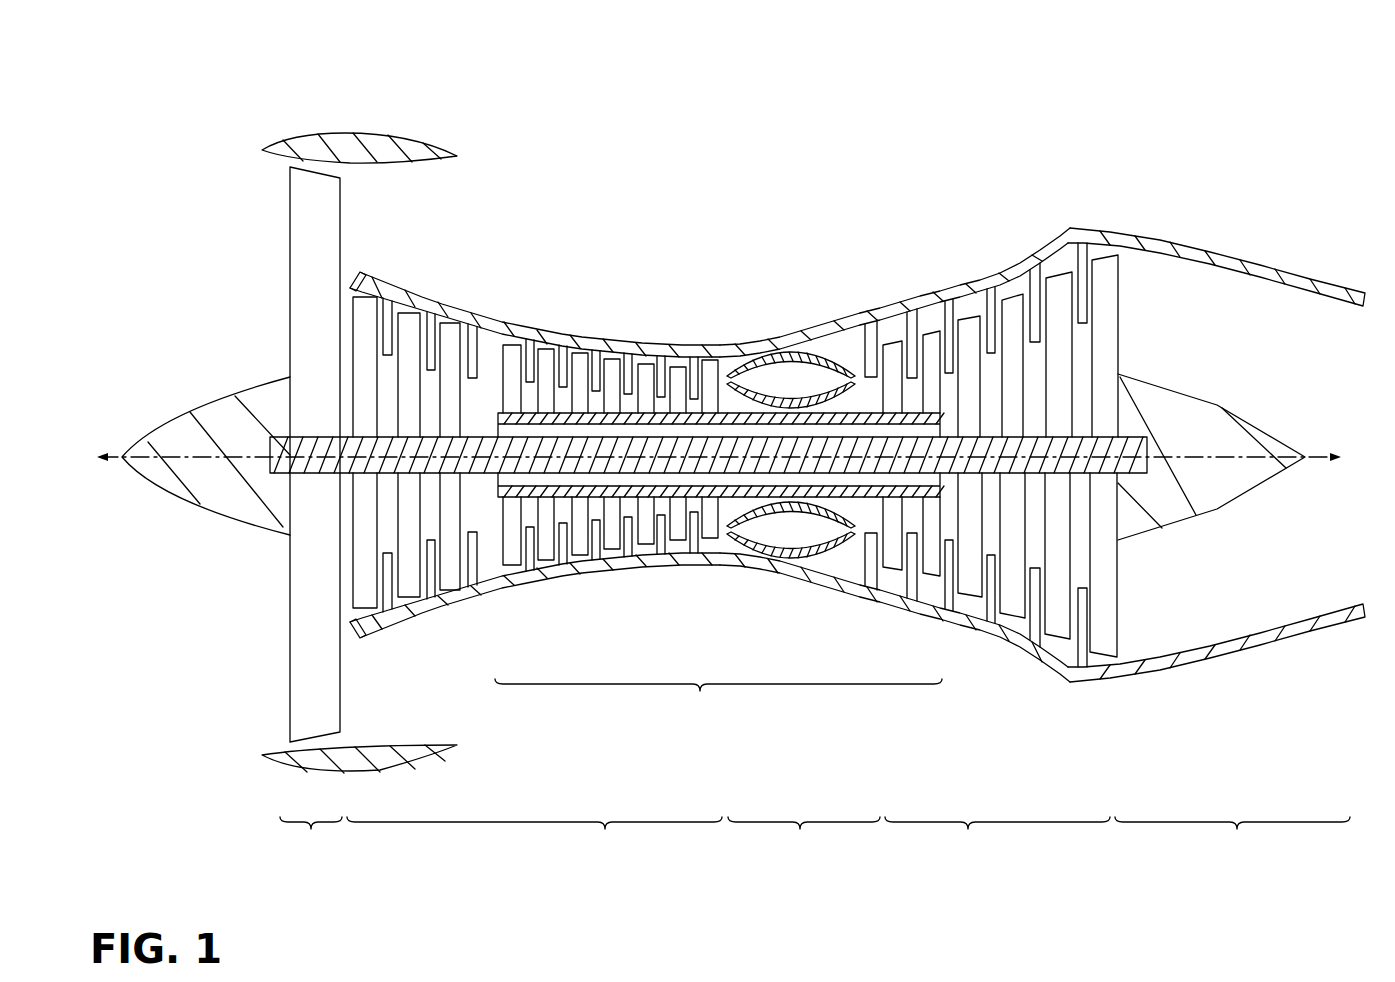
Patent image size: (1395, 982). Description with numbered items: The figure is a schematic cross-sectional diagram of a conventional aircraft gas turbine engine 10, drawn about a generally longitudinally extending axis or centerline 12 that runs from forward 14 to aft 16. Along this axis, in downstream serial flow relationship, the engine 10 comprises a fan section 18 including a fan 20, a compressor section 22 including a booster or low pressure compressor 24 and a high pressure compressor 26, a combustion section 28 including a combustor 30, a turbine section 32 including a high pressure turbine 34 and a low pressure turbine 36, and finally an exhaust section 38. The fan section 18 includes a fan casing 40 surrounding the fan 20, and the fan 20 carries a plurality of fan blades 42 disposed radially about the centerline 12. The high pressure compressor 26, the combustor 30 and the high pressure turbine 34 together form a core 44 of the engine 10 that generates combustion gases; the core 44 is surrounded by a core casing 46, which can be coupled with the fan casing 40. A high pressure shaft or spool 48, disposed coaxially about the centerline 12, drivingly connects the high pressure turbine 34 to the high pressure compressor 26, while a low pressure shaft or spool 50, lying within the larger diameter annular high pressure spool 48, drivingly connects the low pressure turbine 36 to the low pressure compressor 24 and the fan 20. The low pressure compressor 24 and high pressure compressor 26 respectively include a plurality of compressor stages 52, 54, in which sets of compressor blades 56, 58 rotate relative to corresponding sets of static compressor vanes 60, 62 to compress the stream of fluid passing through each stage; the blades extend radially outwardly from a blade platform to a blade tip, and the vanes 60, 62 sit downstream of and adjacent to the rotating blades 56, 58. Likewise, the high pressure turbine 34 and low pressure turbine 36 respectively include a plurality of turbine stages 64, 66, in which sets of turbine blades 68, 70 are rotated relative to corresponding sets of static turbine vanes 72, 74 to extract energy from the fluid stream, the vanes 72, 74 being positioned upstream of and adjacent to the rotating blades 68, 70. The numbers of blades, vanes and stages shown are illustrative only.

The gas turbine engine 10 is at (147, 64).
The centerline 12 is at (186, 453).
The forward 14 is at (84, 457).
The aft 16 is at (1355, 457).
The fan section 18 is at (269, 516).
The fan 20 is at (280, 231).
The compressor section 22 is at (534, 520).
The low pressure compressor 24 is at (488, 612).
The high pressure compressor 26 is at (654, 580).
The combustion section 28 is at (800, 551).
The combustor 30 is at (848, 353).
The turbine section 32 is at (986, 509).
The high pressure turbine 34 is at (866, 606).
The low pressure turbine 36 is at (1001, 651).
The exhaust section 38 is at (1176, 495).
The fan casing 40 is at (363, 133).
The fan blades 42 is at (298, 683).
The core 44 is at (719, 489).
The core casing 46 is at (770, 330).
The HP shaft or spool 48 is at (720, 412).
The LP shaft or spool 50 is at (478, 436).
The compressor stages 52 is at (351, 262).
The compressor stages 54 is at (512, 308).
The compressor blades 56 is at (366, 305).
The compressor blades 58 is at (522, 350).
The static compressor vanes 60 is at (392, 317).
The static compressor vanes 62 is at (531, 353).
The turbine stages 64 is at (898, 302).
The turbine stages 66 is at (1028, 240).
The turbine blades 68 is at (930, 347).
The turbine blades 70 is at (1055, 297).
The static turbine vanes 72 is at (918, 337).
The static turbine vanes 74 is at (1040, 272).